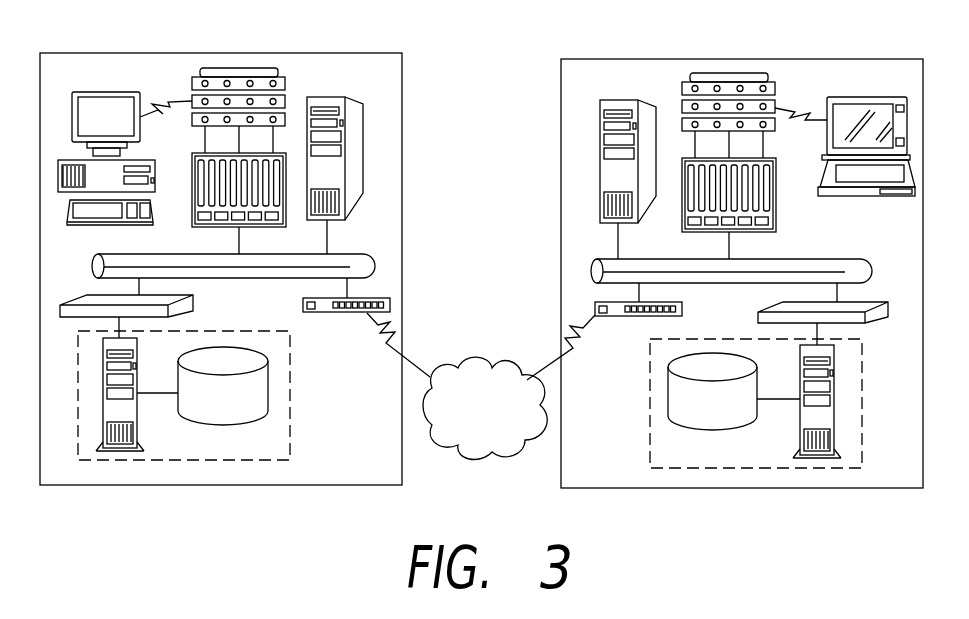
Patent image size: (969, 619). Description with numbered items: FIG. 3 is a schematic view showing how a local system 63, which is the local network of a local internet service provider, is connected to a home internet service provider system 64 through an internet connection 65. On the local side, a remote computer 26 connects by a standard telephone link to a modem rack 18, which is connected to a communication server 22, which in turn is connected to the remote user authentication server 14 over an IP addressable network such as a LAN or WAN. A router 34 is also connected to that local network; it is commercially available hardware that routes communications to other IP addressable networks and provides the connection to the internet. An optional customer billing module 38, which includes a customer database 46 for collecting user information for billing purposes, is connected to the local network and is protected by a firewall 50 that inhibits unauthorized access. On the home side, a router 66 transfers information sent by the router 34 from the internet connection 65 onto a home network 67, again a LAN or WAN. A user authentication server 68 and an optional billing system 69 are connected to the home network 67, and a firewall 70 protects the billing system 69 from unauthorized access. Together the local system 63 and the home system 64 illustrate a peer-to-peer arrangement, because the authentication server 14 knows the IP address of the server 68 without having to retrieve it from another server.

The remote user authentication server 14 is at (627, 105).
The modem rack 18 is at (732, 78).
The communication server 22 is at (776, 189).
The remote computer 26 is at (855, 192).
The router 34 is at (620, 315).
The customer billing module 38 is at (862, 432).
The customer database 46 is at (718, 420).
The firewall 50 is at (873, 310).
The local system 63 is at (812, 490).
The home internet service provider system 64 is at (157, 486).
The internet connection 65 is at (457, 360).
The router 66 is at (315, 312).
The home network 67 is at (350, 260).
The user authentication server 68 is at (322, 97).
The billing system 69 is at (290, 425).
The firewall 70 is at (70, 303).